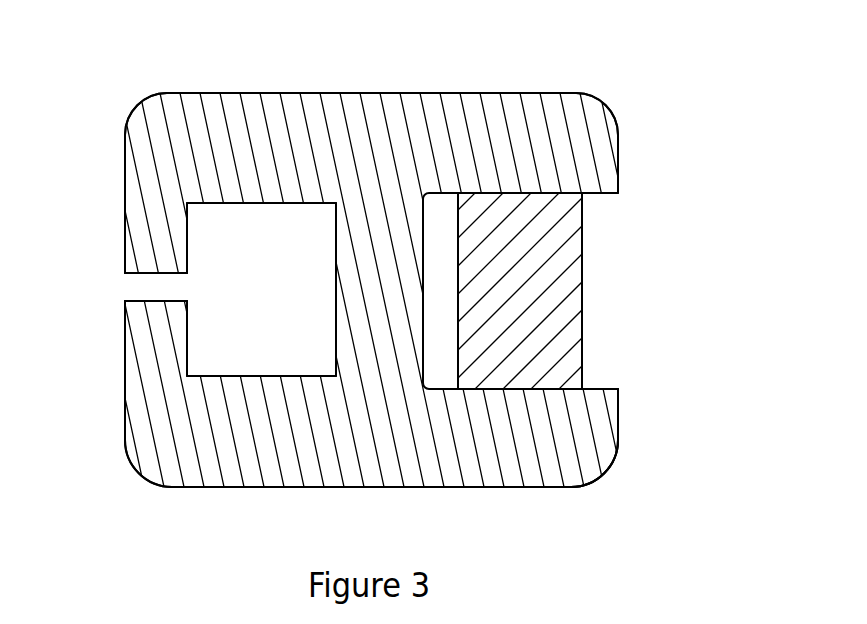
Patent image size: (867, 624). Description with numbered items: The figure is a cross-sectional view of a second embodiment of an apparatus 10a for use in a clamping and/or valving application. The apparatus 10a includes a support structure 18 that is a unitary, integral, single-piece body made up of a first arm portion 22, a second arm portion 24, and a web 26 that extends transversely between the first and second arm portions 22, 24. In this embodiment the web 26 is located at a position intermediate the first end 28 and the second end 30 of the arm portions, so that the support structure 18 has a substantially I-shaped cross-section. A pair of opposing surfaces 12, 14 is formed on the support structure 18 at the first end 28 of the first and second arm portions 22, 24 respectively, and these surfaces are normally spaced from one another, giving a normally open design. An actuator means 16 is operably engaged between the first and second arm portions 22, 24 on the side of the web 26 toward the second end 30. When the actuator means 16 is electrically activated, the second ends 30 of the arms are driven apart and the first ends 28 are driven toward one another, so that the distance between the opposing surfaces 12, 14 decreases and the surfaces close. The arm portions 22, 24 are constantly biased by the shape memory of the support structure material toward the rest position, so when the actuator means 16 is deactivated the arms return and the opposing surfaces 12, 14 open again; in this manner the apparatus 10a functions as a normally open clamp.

The apparatus 10a is at (490, 79).
The opposing surface 12 is at (178, 274).
The opposing surface 14 is at (136, 296).
The actuator means 16 is at (550, 273).
The support structure 18 is at (203, 93).
The first arm portion 22 is at (337, 140).
The second arm portion 24 is at (367, 453).
The web 26 is at (380, 312).
The first end 28 is at (123, 223).
The second end 30 is at (622, 415).